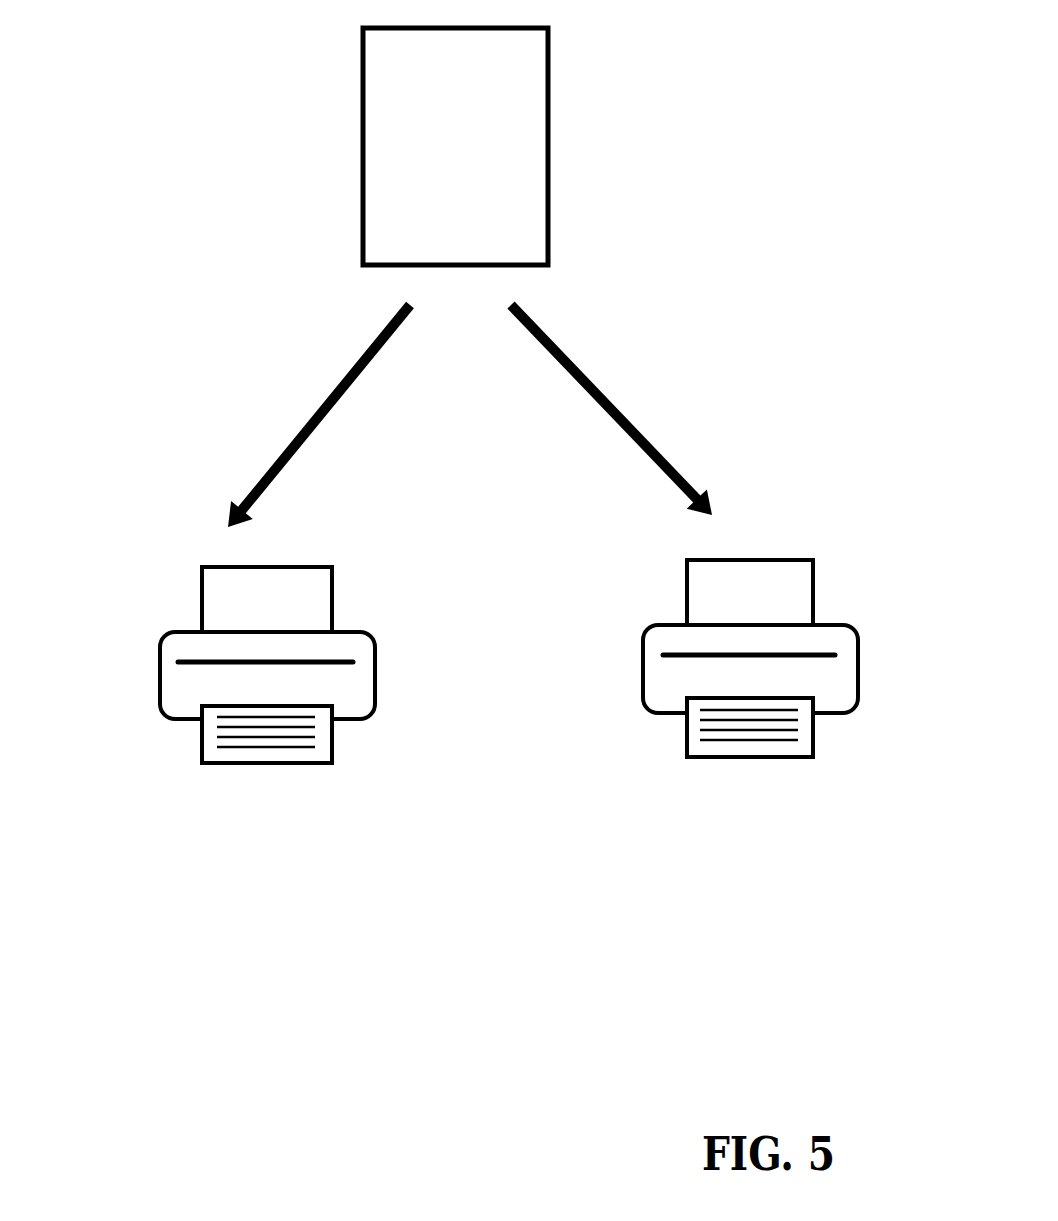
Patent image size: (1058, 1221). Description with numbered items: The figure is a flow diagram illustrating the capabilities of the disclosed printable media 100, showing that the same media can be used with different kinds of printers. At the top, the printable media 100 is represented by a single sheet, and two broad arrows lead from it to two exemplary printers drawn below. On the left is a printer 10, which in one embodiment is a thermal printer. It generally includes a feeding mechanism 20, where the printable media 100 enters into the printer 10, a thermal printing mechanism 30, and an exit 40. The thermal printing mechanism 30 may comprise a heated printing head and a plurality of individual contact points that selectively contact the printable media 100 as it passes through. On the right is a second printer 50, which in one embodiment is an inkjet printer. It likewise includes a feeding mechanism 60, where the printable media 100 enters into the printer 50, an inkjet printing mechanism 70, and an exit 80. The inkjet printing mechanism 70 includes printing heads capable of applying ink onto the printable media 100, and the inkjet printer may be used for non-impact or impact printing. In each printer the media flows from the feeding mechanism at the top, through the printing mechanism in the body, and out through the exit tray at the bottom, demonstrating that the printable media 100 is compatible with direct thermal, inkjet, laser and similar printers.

The printable media 100 is at (500, 92).
The printer 10 is at (232, 696).
The feeding mechanism 20 is at (222, 590).
The thermal printing mechanism 30 is at (172, 678).
The exit 40 is at (220, 763).
The printer 50 is at (716, 690).
The feeding mechanism 60 is at (707, 583).
The inkjet printing mechanism 70 is at (655, 672).
The exit 80 is at (702, 758).